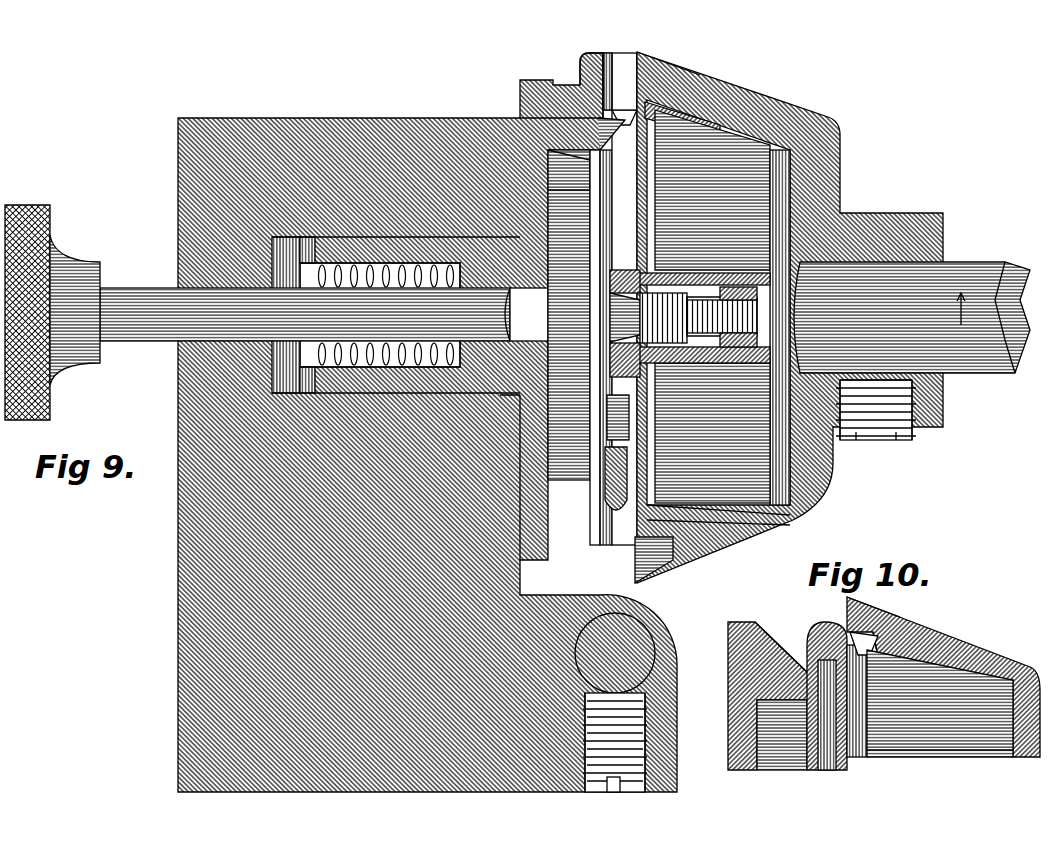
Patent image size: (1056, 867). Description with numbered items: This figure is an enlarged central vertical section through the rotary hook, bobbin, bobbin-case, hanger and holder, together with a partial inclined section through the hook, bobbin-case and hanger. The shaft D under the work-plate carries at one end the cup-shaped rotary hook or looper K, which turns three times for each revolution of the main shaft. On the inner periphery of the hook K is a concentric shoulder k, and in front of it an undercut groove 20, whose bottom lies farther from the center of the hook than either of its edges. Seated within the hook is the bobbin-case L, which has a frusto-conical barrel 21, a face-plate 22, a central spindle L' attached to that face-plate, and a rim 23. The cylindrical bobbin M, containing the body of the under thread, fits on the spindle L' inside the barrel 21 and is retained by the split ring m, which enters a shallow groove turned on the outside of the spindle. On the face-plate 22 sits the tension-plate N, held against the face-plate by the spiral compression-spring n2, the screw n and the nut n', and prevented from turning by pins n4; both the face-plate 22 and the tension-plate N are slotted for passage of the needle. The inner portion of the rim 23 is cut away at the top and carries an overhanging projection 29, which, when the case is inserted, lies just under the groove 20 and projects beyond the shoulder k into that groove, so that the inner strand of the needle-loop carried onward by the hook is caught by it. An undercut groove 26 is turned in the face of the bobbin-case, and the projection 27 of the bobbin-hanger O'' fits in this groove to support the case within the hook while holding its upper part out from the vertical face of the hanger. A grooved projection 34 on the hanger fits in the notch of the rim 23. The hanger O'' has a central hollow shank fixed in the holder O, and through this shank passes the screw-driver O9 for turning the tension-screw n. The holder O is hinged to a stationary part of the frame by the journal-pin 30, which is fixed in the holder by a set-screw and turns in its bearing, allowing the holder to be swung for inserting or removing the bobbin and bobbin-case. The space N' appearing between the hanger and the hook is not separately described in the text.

In FIG. 9, the holder O is at (410, 422).
In FIG. 9, the screw-driver O9 is at (276, 312).
In FIG. 9, the bobbin-hanger O'' is at (520, 118).
In FIG. 10, the bobbin-hanger O'' is at (755, 696).
In FIG. 9, the projection 34 is at (581, 62).
In FIG. 9, the projection 27 is at (530, 130).
In FIG. 10, the projection 27 is at (800, 665).
In FIG. 9, the undercut groove 20 is at (614, 105).
In FIG. 10, the undercut groove 20 is at (875, 640).
In FIG. 9, the concentric shoulder k is at (646, 90).
In FIG. 10, the concentric shoulder k is at (912, 638).
In FIG. 9, the overhanging projection 29 is at (700, 98).
In FIG. 10, the overhanging projection 29 is at (870, 630).
In FIG. 9, the rotary hook K is at (735, 106).
In FIG. 10, the rotary hook K is at (1000, 660).
In FIG. 9, the tension-plate N is at (579, 347).
In FIG. 9, the slot N' is at (622, 327).
In FIG. 9, the face-plate 22 is at (603, 510).
In FIG. 10, the face-plate 22 is at (848, 760).
In FIG. 9, the frusto-conical barrel 21 is at (722, 307).
In FIG. 10, the frusto-conical barrel 21 is at (955, 660).
In FIG. 9, the split ring m is at (703, 280).
In FIG. 9, the bobbin M is at (732, 364).
In FIG. 9, the screw n is at (698, 317).
In FIG. 9, the spiral compression-spring n2 is at (610, 316).
In FIG. 9, the pins n4 is at (610, 410).
In FIG. 9, the central spindle L' is at (712, 433).
In FIG. 9, the bobbin-case L is at (718, 525).
In FIG. 10, the bobbin-case L is at (940, 756).
In FIG. 9, the undercut groove 26 is at (616, 530).
In FIG. 10, the undercut groove 26 is at (822, 655).
In FIG. 9, the rim 23 is at (636, 550).
In FIG. 10, the rim 23 is at (825, 623).
In FIG. 9, the shaft D is at (912, 317).
In FIG. 9, the nut n' is at (861, 369).
In FIG. 9, the journal-pin 30 is at (650, 650).